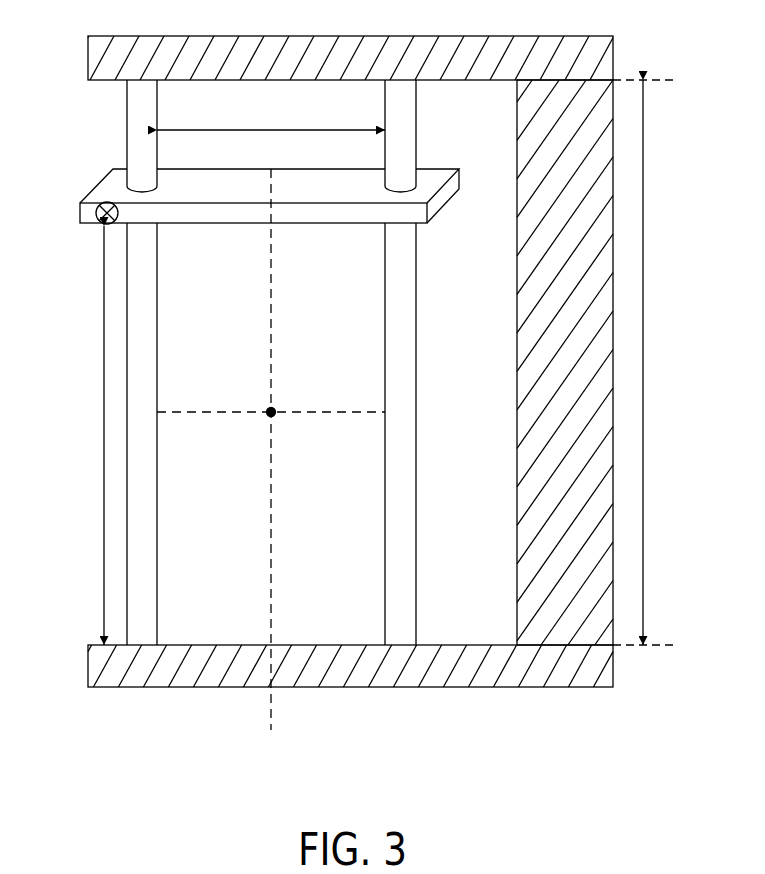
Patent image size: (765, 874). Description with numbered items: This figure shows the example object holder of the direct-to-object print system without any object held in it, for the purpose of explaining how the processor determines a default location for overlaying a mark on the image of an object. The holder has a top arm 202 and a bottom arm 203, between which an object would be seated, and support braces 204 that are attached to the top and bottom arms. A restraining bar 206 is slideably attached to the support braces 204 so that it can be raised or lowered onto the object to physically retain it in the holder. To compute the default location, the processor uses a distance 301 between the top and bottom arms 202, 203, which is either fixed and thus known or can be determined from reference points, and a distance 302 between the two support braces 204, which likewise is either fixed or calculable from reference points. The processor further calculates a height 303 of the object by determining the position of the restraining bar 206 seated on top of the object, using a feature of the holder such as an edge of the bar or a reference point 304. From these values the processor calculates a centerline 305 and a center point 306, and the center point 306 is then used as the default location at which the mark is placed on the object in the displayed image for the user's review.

The top arm 202 is at (88, 58).
The bottom arm 203 is at (518, 478).
The support braces 204 is at (157, 353).
The restraining bar 206 is at (433, 169).
The distance between the top and bottom arms 301 is at (645, 340).
The distance between the two support arms 302 is at (258, 130).
The height of the object 303 is at (103, 388).
The reference point 304 is at (98, 209).
The centerline 305 is at (272, 702).
The center point 306 is at (278, 404).